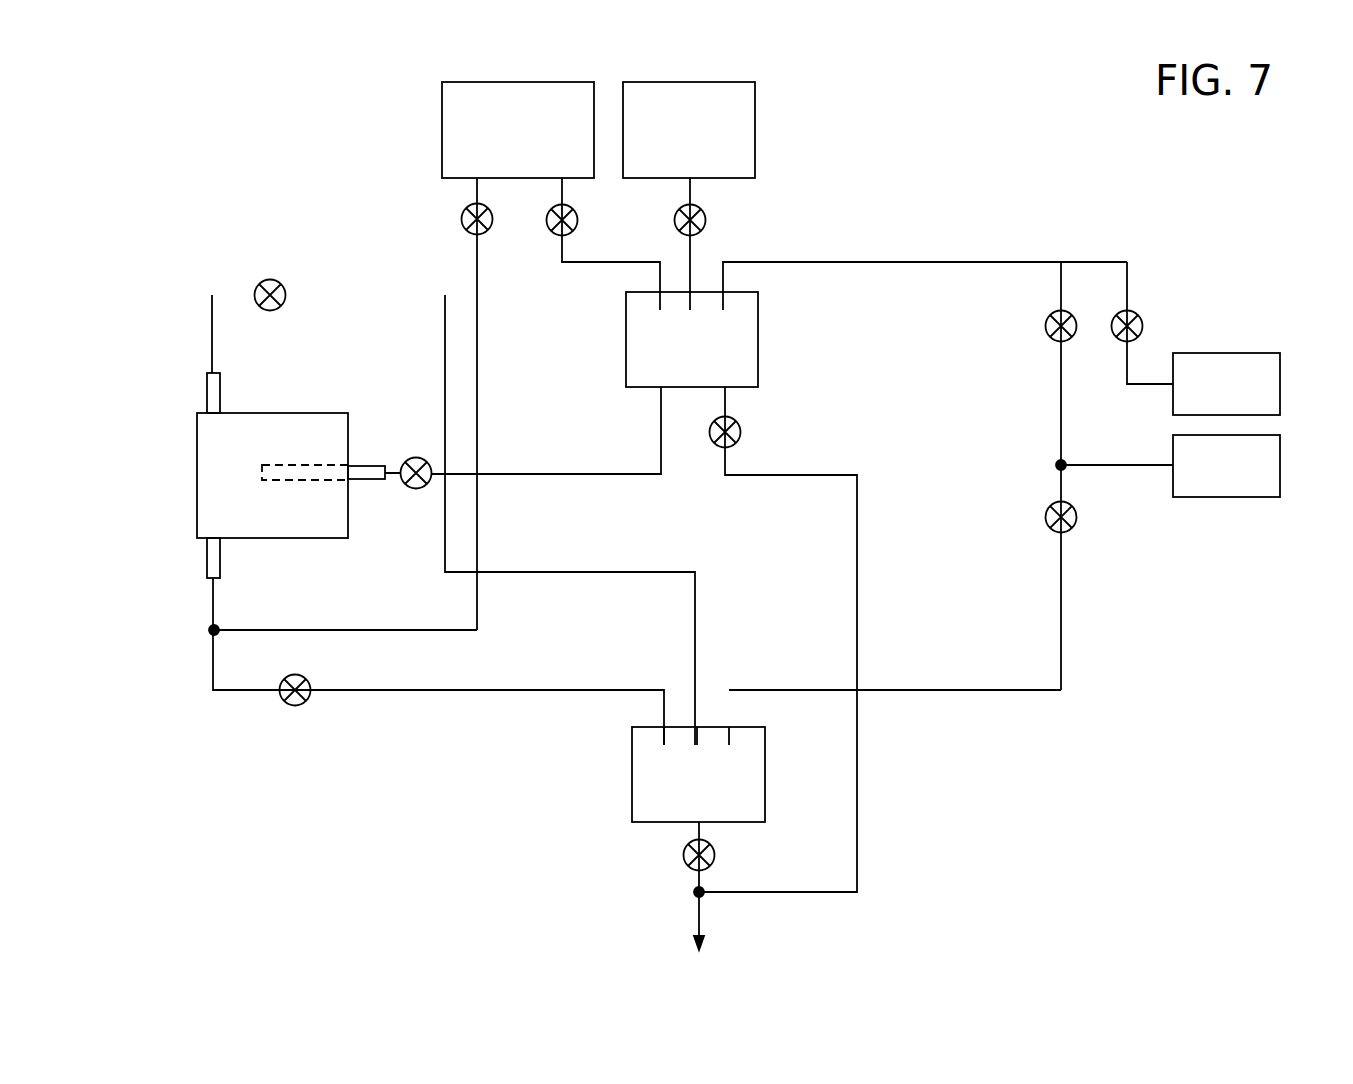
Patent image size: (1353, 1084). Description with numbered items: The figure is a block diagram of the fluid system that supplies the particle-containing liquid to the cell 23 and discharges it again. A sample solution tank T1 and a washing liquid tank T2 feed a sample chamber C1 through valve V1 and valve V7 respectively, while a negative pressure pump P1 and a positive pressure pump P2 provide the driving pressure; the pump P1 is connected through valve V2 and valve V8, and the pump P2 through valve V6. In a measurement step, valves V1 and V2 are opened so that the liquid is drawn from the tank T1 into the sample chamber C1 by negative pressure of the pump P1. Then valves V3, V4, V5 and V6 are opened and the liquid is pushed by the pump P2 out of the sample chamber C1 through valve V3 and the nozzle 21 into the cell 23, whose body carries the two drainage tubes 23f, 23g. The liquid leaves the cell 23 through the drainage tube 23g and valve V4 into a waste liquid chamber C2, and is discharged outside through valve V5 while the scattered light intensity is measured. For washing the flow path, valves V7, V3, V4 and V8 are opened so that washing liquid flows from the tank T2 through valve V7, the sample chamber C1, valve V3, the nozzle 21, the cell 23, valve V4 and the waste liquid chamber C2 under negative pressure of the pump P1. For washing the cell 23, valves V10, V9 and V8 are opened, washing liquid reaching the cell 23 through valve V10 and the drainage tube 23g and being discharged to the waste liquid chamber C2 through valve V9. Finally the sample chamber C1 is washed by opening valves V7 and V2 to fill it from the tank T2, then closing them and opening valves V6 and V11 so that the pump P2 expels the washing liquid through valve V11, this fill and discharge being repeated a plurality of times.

The sample solution tank T1 is at (757, 123).
The washing liquid tank T2 is at (440, 92).
The sample chamber C1 is at (760, 337).
The waste liquid chamber C2 is at (628, 758).
The negative pressure pump P1 is at (1260, 497).
The positive pressure pump P2 is at (1248, 353).
The valve V1 is at (706, 222).
The valve V2 is at (1044, 328).
The valve V3 is at (418, 490).
The valve V4 is at (297, 705).
The valve V5 is at (717, 855).
The valve V6 is at (1143, 323).
The valve V7 is at (578, 222).
The valve V8 is at (1077, 517).
The valve V9 is at (272, 279).
The valve V10 is at (462, 221).
The valve V11 is at (742, 432).
The nozzle 21 is at (368, 465).
The cell 23 is at (304, 399).
The drainage tube 23f is at (205, 385).
The drainage tube 23g is at (203, 555).